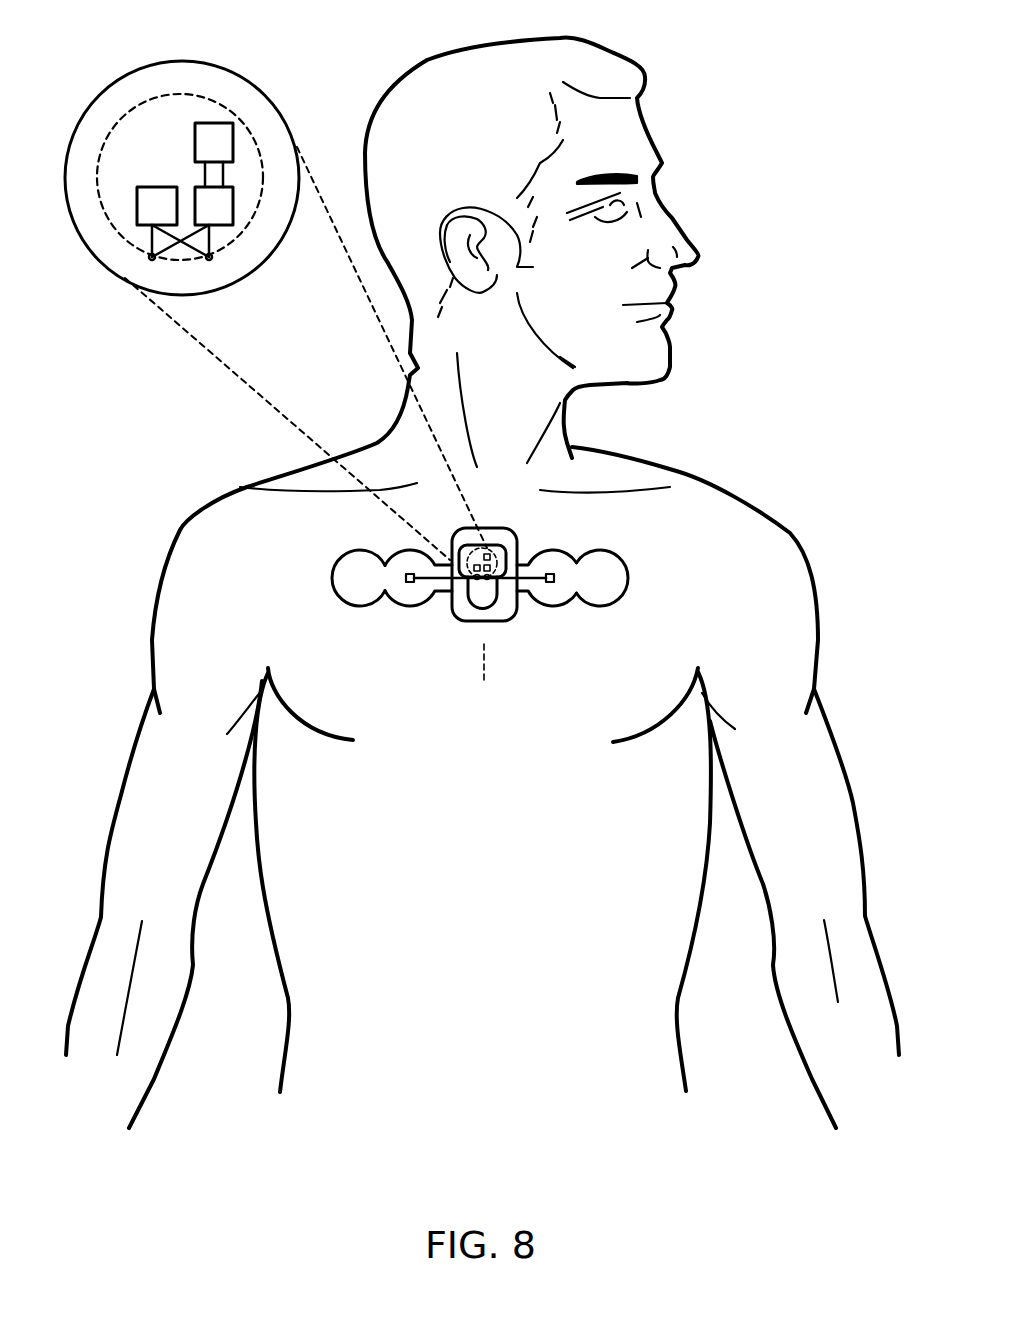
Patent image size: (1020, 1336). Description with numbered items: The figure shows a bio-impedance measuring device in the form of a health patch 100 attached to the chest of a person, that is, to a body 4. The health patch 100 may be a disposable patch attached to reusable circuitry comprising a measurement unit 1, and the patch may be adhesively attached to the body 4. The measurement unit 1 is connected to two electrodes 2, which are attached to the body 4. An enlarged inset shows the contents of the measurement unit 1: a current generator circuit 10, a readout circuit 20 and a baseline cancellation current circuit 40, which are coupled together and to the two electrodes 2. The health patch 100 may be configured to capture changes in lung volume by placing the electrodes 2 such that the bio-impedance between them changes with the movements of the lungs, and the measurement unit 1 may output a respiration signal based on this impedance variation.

The measurement unit 1 is at (267, 284).
The electrodes 2 is at (407, 574).
The body 4 is at (273, 533).
The current generator circuit 10 is at (137, 205).
The readout circuit 20 is at (233, 207).
The baseline cancellation current circuit 40 is at (233, 143).
The health patch 100 is at (527, 521).